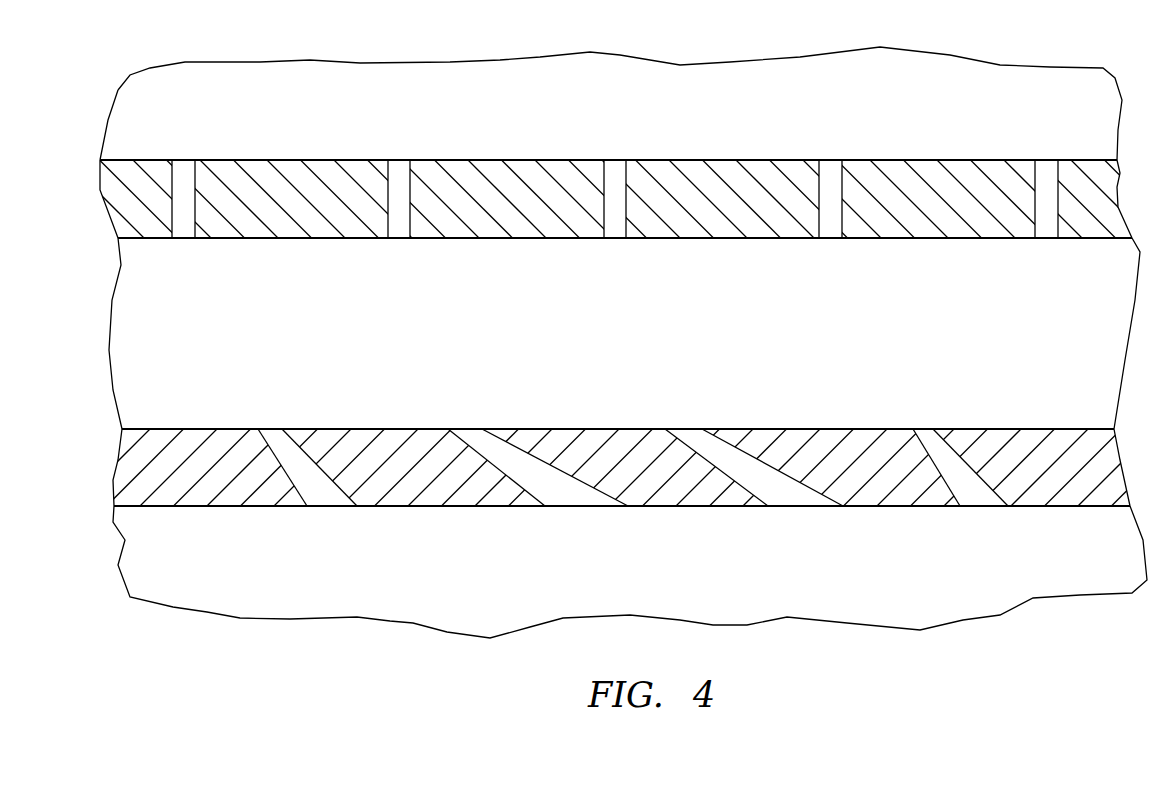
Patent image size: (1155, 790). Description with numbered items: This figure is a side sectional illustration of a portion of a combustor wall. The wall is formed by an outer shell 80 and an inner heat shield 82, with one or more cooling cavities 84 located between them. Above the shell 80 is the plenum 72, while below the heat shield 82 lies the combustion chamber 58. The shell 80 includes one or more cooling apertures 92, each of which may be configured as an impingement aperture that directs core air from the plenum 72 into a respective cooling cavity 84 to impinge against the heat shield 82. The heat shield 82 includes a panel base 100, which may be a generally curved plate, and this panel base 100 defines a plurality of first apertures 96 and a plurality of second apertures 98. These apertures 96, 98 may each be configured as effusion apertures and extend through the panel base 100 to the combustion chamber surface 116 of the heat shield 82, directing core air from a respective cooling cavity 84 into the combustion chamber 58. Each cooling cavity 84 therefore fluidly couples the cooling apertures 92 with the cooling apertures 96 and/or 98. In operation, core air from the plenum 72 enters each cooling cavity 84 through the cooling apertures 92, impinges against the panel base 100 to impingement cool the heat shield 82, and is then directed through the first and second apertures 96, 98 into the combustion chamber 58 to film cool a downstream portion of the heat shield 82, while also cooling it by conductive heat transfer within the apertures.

The combustion chamber 58 is at (634, 599).
The plenum 72 is at (526, 113).
The shell 80 is at (288, 152).
The heat shield 82 is at (242, 522).
The cooling cavity 84 is at (581, 351).
The cooling aperture 92 is at (182, 172).
The first aperture 96 is at (276, 440).
The second aperture 98 is at (472, 432).
The panel base 100 is at (180, 428).
The combustion chamber surface 116 is at (437, 507).